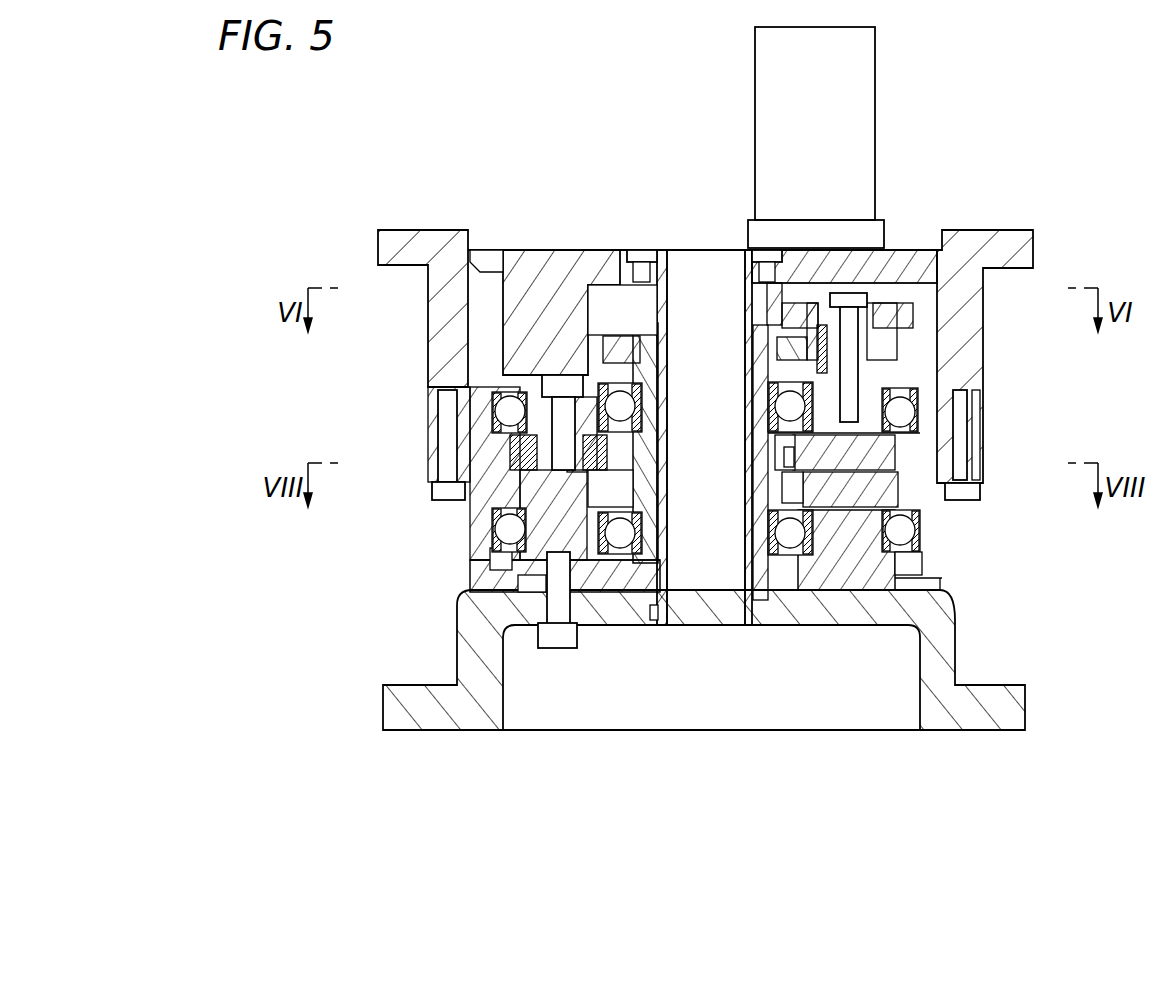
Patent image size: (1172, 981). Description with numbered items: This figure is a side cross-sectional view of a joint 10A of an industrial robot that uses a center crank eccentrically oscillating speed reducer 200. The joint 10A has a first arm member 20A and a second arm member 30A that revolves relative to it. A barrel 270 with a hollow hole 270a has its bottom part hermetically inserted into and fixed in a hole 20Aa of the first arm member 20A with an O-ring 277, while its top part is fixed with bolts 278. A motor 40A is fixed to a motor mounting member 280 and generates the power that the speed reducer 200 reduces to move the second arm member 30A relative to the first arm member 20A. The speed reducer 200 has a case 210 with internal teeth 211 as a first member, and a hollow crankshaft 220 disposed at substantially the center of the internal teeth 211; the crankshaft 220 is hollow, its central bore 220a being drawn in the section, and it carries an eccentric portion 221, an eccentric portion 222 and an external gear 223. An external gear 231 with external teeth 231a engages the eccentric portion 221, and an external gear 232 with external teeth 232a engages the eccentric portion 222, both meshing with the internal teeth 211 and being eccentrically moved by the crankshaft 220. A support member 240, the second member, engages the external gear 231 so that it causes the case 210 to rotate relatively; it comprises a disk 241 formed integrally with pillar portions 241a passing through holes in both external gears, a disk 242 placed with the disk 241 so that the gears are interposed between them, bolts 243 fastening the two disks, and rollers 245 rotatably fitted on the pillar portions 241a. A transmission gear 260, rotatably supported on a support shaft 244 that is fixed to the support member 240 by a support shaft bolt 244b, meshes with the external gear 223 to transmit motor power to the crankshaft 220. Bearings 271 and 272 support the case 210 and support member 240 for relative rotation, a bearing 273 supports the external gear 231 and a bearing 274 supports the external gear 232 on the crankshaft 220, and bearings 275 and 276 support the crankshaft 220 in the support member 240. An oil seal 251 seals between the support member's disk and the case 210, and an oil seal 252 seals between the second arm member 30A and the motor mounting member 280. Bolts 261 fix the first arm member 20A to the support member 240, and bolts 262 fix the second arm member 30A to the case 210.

The joint 10A is at (622, 92).
The eccentrically oscillating speed reducer 200 is at (320, 240).
The first arm member 20A is at (742, 701).
The hole 20Aa is at (666, 628).
The second arm member 30A is at (432, 232).
The motor 40A is at (855, 147).
The case 210 is at (480, 563).
The internal teeth 211 is at (500, 488).
The hollow crankshaft 220 is at (657, 378).
The shaft bore 220a is at (692, 257).
The eccentric portion 221 is at (640, 447).
The eccentric portion 222 is at (757, 497).
The external gear 223 is at (742, 258).
The external gear 231 is at (607, 460).
The external teeth 231a is at (480, 445).
The external gear 232 is at (770, 510).
The external teeth 232a is at (447, 478).
The support member 240 is at (853, 585).
The disk 241 is at (530, 583).
The pillar portions 241a is at (490, 540).
The disk 242 is at (530, 385).
The bolts 243 is at (440, 392).
The support shaft 244 is at (950, 258).
The support shaft bolt 244b is at (880, 275).
The rollers 245 is at (446, 416).
The oil seal 251 is at (530, 568).
The oil seal 252 is at (483, 262).
The transmission gear 260 is at (850, 300).
The bolts 261 is at (912, 317).
The bolts 262 is at (437, 490).
The barrel 270 is at (658, 255).
The hollow hole 270a is at (705, 620).
The bearing 271 is at (960, 405).
The bearing 272 is at (915, 527).
The bearing 273 is at (790, 453).
The bearing 274 is at (800, 485).
The bearing 275 is at (662, 380).
The bearing 276 is at (905, 560).
The O-ring 277 is at (757, 593).
The bolts 278 is at (640, 248).
The motor mounting member 280 is at (555, 248).